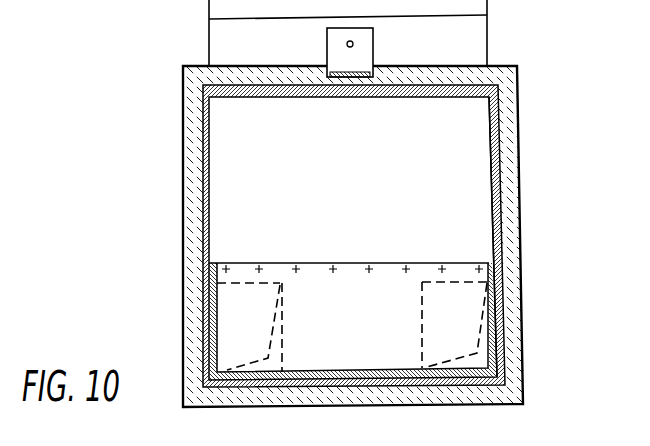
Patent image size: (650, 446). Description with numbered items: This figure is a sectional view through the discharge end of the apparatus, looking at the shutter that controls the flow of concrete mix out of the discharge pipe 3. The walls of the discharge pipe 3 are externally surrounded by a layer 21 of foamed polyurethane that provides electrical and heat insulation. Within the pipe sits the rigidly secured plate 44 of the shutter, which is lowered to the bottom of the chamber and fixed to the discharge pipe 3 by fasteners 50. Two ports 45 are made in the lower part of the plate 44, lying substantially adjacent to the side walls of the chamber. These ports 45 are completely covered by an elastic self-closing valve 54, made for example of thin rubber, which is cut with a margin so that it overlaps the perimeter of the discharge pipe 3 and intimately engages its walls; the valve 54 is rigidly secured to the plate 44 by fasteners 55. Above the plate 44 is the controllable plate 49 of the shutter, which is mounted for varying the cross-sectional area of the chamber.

The layer of foamed polyurethane 21 is at (200, 128).
The rigidly secured plate 44 is at (463, 108).
The discharge pipe 3 is at (218, 288).
The elastic self-closing valve 54 is at (397, 312).
The fasteners 55 is at (220, 263).
The ports 45 is at (235, 328).
The controllable plate 49 is at (487, 4).
The fasteners 50 is at (347, 44).